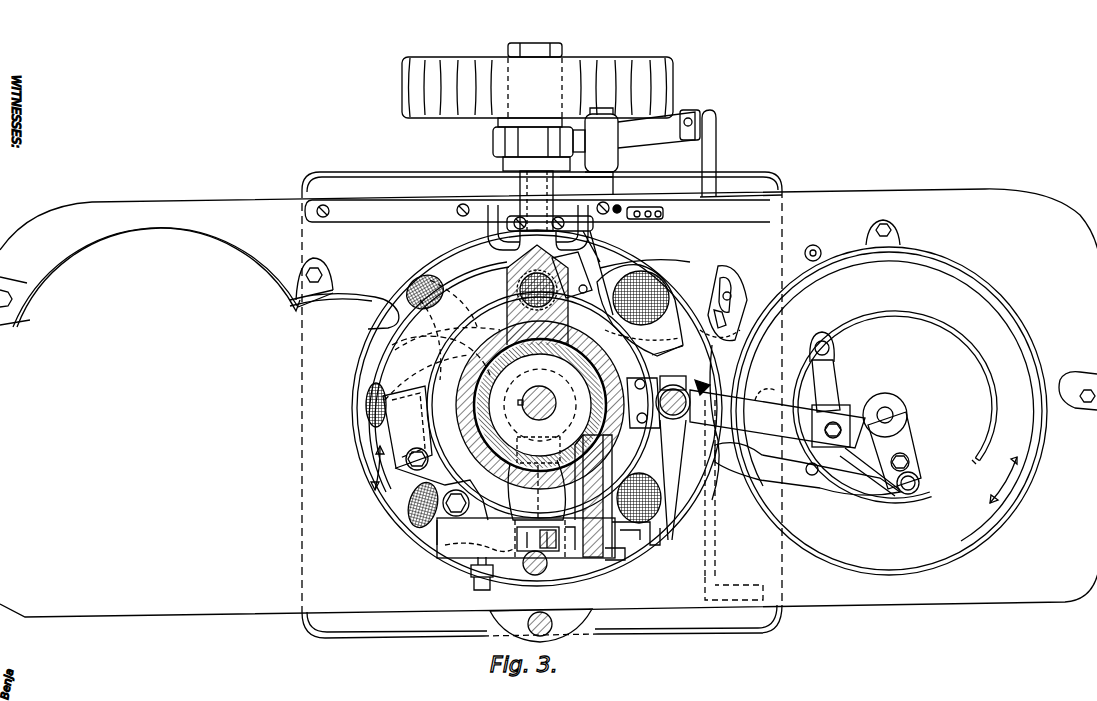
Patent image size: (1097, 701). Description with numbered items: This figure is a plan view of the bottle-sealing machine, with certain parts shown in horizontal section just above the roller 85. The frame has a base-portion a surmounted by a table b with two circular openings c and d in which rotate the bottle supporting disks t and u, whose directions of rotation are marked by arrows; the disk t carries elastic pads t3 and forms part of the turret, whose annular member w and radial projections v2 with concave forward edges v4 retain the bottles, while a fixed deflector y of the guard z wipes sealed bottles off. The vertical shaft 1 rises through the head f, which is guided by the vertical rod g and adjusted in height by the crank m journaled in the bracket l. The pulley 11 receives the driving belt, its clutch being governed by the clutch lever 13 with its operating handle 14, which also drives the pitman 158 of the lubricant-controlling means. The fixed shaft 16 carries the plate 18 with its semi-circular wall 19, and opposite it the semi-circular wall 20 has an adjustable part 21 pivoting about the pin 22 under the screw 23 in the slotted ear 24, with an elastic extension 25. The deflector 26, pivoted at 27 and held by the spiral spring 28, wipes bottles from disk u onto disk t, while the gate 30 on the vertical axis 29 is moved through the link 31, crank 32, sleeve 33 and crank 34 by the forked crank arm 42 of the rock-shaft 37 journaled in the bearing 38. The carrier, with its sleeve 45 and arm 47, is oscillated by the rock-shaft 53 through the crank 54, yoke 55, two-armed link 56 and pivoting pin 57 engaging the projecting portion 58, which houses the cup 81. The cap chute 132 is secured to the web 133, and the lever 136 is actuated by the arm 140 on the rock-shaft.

The vertical shaft 1 is at (545, 392).
The pulley 11 is at (672, 92).
The clutch lever 13 is at (669, 140).
The operating handle 14 is at (716, 152).
The fixed shaft 16 is at (889, 412).
The plate 18 is at (889, 401).
The semi-circular wall 19 is at (996, 419).
The semi-circular wall 20 is at (1028, 316).
The adjustable part of wall 21 is at (763, 292).
The pin 22 is at (817, 250).
The screw 23 is at (728, 292).
The slotted ear 24 is at (720, 266).
The elastic extension 25 is at (681, 365).
The deflector 26 is at (728, 470).
The pivot of deflector 27 is at (760, 385).
The spiral spring 28 is at (857, 448).
The vertical axis 29 is at (830, 349).
The gate 30 is at (775, 466).
The link 31 is at (866, 490).
The crank 32 is at (910, 446).
The sleeve 33 is at (905, 420).
The crank 34 is at (855, 410).
The rock-shaft 37 is at (668, 384).
The bearing 38 is at (608, 456).
The forked crank arm 42 is at (777, 419).
The sleeve of carrier 45 is at (598, 412).
The arm of carrier 47 is at (540, 402).
The rock-shaft 53 is at (512, 297).
The crank 54 is at (438, 300).
The yoke 55 is at (380, 440).
The two-armed link 56 is at (427, 492).
The pivoting pin 57 is at (432, 508).
The projecting portion of arm 58 is at (447, 537).
The cup 81 is at (479, 584).
The roller 85 is at (537, 556).
The cap chute 132 is at (617, 562).
The web 133 is at (530, 545).
The lever 136 is at (648, 548).
The arm 140 is at (720, 500).
The pitman 158 is at (680, 183).
The base-portion of frame a is at (756, 184).
The table b is at (548, 415).
The circular opening c is at (542, 405).
The circular opening d is at (822, 560).
The head of frame f is at (477, 375).
The vertical rod g is at (532, 616).
The bracket l is at (477, 243).
The crank m is at (614, 138).
The cam disc s is at (430, 402).
The bottle supporting disk t is at (583, 562).
The elastic bottle supporting pads t3 is at (648, 282).
The bottle supporting disk u is at (893, 564).
The radial projections v2 is at (636, 278).
The concave edge v4 is at (647, 310).
The annular member w is at (648, 328).
The fixed deflector y is at (354, 330).
The guard z is at (224, 238).